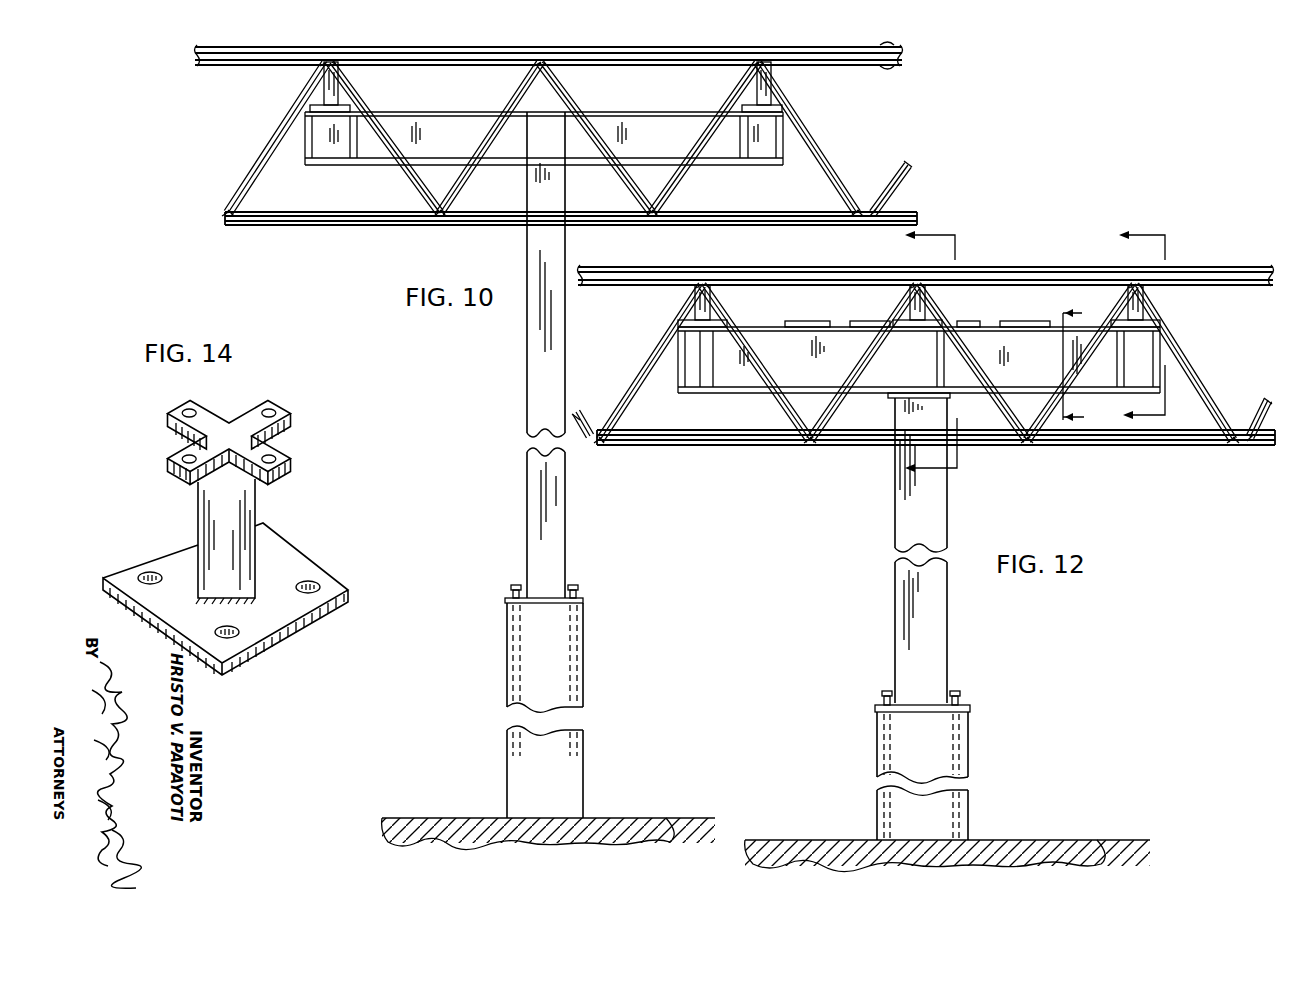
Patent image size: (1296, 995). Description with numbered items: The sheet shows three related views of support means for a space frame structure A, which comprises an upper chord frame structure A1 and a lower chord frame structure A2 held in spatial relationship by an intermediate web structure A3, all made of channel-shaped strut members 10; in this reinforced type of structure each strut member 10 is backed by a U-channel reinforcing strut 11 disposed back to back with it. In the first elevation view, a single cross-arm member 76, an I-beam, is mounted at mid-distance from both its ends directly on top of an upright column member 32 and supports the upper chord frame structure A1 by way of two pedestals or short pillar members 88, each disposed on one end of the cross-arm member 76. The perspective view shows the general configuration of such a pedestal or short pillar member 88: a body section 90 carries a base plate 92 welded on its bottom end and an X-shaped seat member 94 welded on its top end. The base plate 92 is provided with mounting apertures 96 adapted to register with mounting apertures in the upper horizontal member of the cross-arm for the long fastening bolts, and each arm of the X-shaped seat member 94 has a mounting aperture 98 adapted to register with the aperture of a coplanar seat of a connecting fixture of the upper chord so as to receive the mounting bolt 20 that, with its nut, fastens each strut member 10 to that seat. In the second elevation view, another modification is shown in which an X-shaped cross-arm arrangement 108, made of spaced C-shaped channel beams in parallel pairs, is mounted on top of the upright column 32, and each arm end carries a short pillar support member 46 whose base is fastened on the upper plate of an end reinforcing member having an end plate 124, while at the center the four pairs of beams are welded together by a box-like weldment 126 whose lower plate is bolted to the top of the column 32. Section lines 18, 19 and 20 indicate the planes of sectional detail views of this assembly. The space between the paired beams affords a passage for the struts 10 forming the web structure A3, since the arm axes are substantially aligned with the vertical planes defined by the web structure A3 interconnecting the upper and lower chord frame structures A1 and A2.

In FIG. 10, the strut member 10 is at (904, 44).
In FIG. 10, the U-channel reinforcing strut 11 is at (902, 66).
In FIG. 12, the section line 18 is at (946, 351).
In FIG. 12, the section line 19 is at (1157, 325).
In FIG. 12, the mounting bolt 20 is at (1086, 362).
In FIG. 10, the upright column member 32 is at (540, 329).
In FIG. 12, the upright column member 32 is at (948, 527).
In FIG. 12, the short pillar support member 46 is at (948, 290).
In FIG. 10, the cross-arm member 76 is at (420, 125).
In FIG. 10, the pedestal or short pillar member 88 is at (322, 87).
In FIG. 14, the pedestal or short pillar member 88 is at (231, 524).
In FIG. 14, the body section 90 is at (250, 512).
In FIG. 14, the base plate 92 is at (268, 615).
In FIG. 14, the X-shaped seat member 94 is at (242, 428).
In FIG. 14, the mounting apertures 96 is at (311, 582).
In FIG. 14, the mounting aperture 98 is at (170, 418).
In FIG. 12, the X-shaped cross-arm arrangement 108 is at (840, 322).
In FIG. 12, the end plate 124 is at (801, 388).
In FIG. 12, the box-like weldment 126 is at (969, 318).
In FIG. 10, the space frame structure A is at (534, 132).
In FIG. 12, the space frame structure A is at (923, 349).
In FIG. 10, the upper chord frame structure A1 is at (197, 47).
In FIG. 12, the upper chord frame structure A1 is at (1262, 258).
In FIG. 10, the lower chord frame structure A2 is at (293, 212).
In FIG. 12, the lower chord frame structure A2 is at (1186, 443).
In FIG. 10, the intermediate web structure A3 is at (273, 150).
In FIG. 12, the intermediate web structure A3 is at (1194, 349).